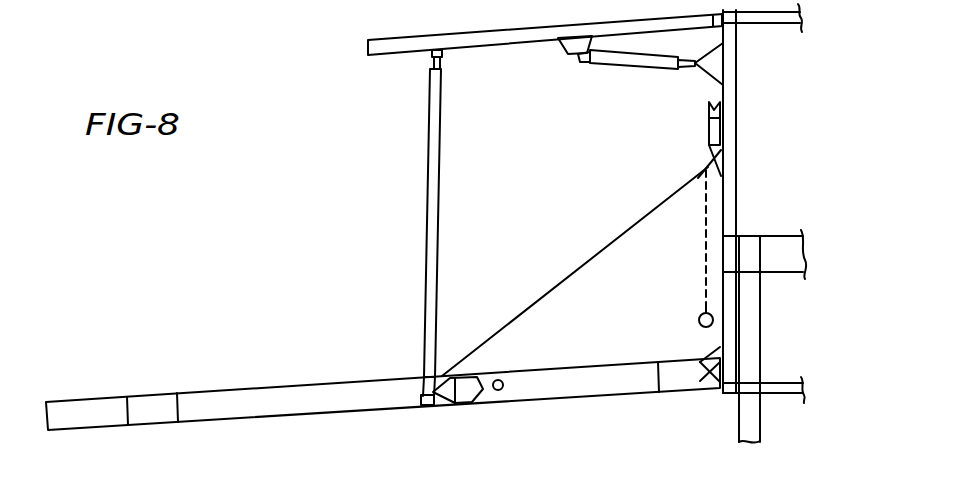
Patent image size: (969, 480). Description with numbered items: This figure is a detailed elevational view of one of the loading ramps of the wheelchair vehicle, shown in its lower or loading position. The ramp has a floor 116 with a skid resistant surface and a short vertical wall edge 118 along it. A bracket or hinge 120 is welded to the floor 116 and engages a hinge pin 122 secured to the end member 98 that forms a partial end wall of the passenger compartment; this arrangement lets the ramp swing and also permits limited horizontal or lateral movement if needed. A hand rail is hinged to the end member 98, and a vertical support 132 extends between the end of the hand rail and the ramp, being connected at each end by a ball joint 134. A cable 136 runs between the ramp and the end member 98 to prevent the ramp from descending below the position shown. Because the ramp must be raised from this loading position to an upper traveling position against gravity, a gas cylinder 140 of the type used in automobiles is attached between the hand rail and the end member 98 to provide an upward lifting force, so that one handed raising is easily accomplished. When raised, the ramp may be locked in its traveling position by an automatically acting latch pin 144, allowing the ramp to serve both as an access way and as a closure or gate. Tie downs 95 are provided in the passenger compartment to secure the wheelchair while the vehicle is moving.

The tie downs 95 is at (773, 386).
The end member 98 is at (736, 134).
The floor 116 is at (225, 417).
The short vertical wall edge 118 is at (198, 403).
The bracket or hinge 120 is at (675, 372).
The hinge pin 122 is at (706, 380).
The vertical support 132 is at (430, 257).
The ball joint 134 is at (432, 56).
The cable 136 is at (583, 266).
The gas cylinder 140 is at (631, 69).
The latch pin 144 is at (707, 230).